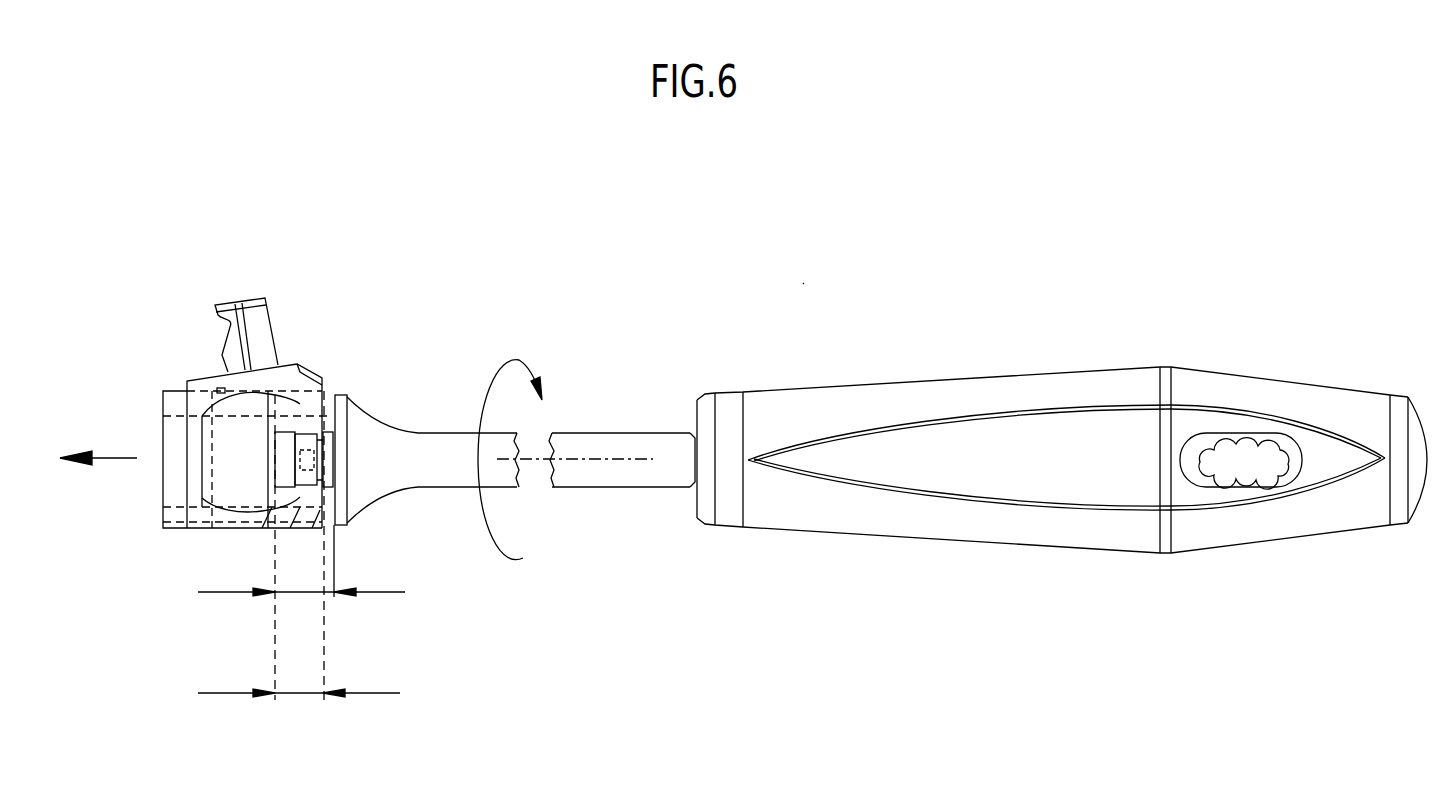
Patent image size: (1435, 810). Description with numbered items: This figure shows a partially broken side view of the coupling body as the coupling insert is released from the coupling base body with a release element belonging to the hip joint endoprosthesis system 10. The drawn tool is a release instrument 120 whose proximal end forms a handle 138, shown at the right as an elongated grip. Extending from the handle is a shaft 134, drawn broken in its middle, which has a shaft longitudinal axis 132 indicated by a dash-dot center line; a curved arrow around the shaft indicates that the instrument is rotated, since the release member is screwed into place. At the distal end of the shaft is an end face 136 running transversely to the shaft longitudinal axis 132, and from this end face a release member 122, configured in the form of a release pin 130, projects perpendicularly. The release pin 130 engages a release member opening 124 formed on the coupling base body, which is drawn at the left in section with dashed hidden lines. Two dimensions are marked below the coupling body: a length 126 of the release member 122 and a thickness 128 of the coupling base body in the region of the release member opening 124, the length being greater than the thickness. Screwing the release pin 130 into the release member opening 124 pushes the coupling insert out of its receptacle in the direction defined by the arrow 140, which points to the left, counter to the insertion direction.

The hip joint endoprosthesis system 10 is at (808, 280).
The release instrument 120 is at (835, 548).
The release member 122 is at (267, 470).
The release member opening 124 is at (298, 436).
The length 126 is at (298, 597).
The thickness 128 is at (297, 700).
The release pin 130 is at (313, 480).
The shaft longitudinal axis 132 is at (595, 455).
The shaft 134 is at (620, 480).
The end face 136 is at (328, 522).
The handle 138 is at (1042, 398).
The arrow 140 is at (110, 455).